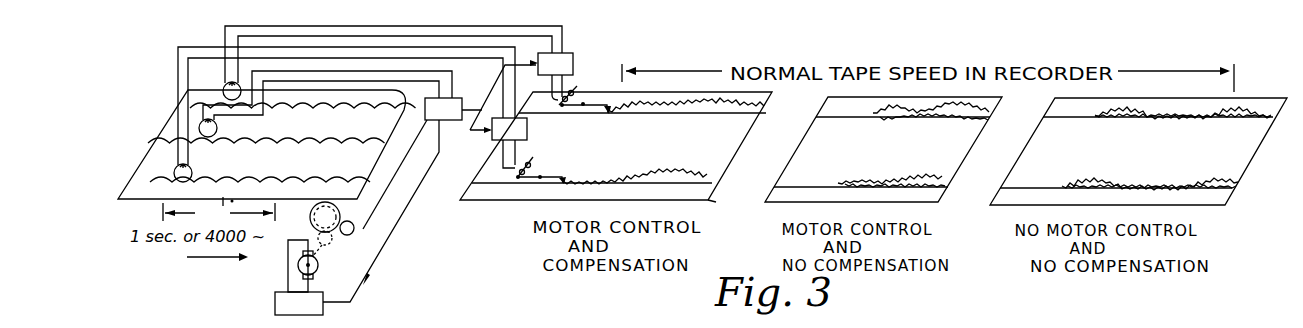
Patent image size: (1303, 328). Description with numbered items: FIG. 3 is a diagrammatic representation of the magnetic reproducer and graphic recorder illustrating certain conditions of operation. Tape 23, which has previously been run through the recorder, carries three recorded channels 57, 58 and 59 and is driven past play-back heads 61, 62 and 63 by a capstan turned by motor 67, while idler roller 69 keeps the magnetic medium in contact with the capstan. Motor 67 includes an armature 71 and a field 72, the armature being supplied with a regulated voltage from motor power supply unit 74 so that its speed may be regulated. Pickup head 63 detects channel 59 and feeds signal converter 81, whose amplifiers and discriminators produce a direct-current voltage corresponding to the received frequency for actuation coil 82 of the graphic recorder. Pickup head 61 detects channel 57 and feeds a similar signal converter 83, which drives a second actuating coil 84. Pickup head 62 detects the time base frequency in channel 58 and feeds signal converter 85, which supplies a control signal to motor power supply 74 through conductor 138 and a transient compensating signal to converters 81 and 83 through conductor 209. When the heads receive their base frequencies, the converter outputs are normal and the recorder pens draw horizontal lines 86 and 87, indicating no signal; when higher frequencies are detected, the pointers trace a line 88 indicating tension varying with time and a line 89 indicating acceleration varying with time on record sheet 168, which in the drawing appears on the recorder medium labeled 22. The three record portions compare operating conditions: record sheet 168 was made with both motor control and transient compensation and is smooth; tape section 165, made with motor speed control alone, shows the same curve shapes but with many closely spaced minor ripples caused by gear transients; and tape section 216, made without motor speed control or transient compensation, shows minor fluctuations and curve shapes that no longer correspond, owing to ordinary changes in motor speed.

The magnetic tape 22 is at (615, 170).
The tape 23 is at (254, 161).
The channel 57 is at (260, 165).
The channel 58 is at (266, 154).
The channel 59 is at (303, 117).
The pickup head 61 is at (308, 114).
The pickup head 62 is at (284, 104).
The pickup head 63 is at (352, 63).
The motor 67 is at (283, 266).
The idler roller 69 is at (348, 241).
The armature 71 is at (277, 278).
The field 72 is at (219, 216).
The motor power supply unit 74 is at (281, 305).
The signal converter 81 is at (573, 47).
The actuation coil 82 is at (581, 87).
The signal converter 83 is at (488, 141).
The second actuating coil 84 is at (538, 162).
The signal converter 85 is at (412, 163).
The horizontal line 86 is at (686, 119).
The horizontal line 87 is at (610, 190).
The line 88 is at (658, 115).
The line 89 is at (635, 167).
The conductor 138 is at (381, 211).
The tape section 165 is at (883, 161).
The record sheet 168 is at (732, 213).
The conductor 209 is at (497, 96).
The tape section 216 is at (1138, 151).